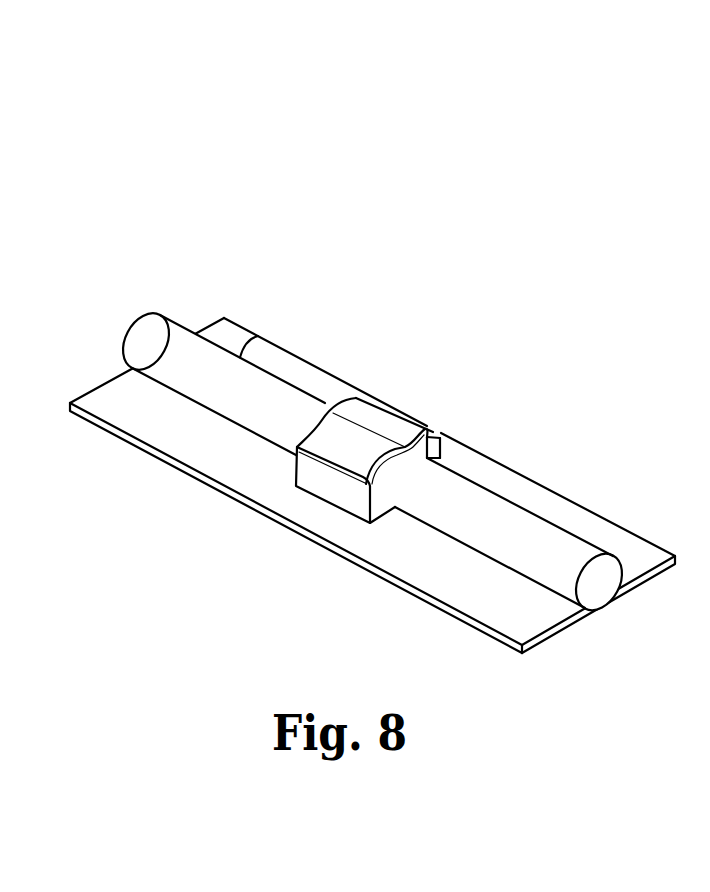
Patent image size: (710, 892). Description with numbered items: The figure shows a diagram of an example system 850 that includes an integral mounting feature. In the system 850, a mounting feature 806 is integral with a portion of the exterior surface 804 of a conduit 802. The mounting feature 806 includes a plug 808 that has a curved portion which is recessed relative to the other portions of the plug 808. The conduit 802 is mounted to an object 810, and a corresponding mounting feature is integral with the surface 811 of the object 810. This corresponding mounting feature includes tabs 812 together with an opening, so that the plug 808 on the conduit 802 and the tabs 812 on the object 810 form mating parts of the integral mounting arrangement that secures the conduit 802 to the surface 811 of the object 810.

The system 850 is at (372, 384).
The conduit 802 is at (180, 312).
The exterior surface 804 is at (258, 336).
The mounting feature 806 is at (303, 452).
The plug 808 is at (327, 434).
The object 810 is at (525, 470).
The surface 811 is at (595, 527).
The tabs 812 is at (323, 487).